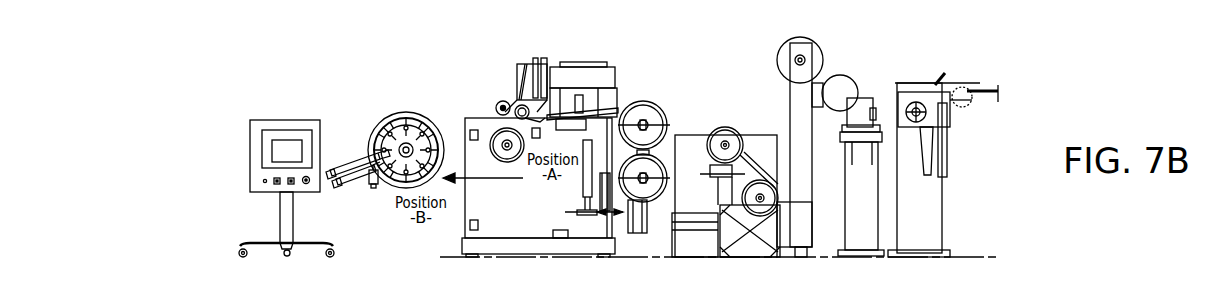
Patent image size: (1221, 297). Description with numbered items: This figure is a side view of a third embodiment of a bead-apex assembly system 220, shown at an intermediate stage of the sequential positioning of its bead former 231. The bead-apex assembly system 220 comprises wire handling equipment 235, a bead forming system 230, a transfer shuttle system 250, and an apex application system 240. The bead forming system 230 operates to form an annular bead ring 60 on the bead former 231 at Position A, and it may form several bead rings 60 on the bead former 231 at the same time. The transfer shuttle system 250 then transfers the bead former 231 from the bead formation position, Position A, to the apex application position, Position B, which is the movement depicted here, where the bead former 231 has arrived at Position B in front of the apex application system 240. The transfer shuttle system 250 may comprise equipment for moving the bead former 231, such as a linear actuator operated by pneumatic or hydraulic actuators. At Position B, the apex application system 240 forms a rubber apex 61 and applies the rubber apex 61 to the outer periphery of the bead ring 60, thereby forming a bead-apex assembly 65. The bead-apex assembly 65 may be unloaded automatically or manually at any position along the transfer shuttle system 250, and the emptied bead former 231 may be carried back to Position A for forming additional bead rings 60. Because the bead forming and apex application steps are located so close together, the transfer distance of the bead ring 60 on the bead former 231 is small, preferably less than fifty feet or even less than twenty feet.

The bead-apex assembly system 220 is at (196, 96).
The bead forming system 230 is at (605, 54).
The bead former 231 is at (398, 182).
The wire handling equipment 235 is at (879, 85).
The apex application system 240 is at (350, 133).
The transfer shuttle system 250 is at (513, 188).
The bead ring 60 is at (410, 122).
The rubber apex 61 is at (436, 122).
The bead-apex assembly 65 is at (411, 118).